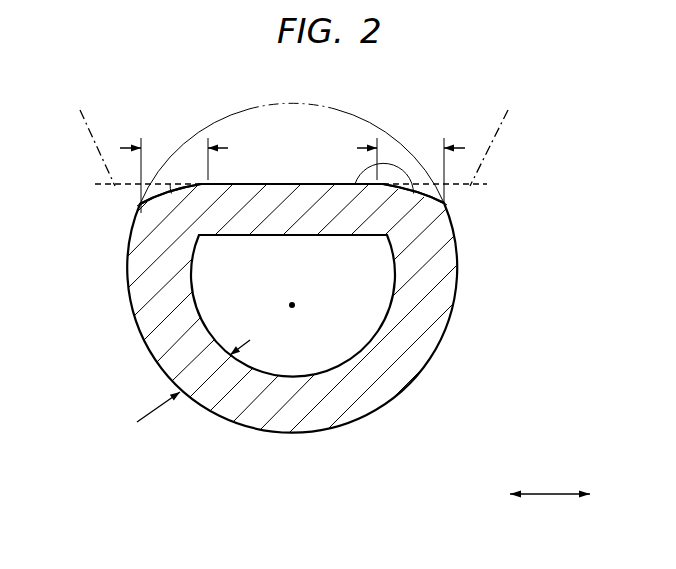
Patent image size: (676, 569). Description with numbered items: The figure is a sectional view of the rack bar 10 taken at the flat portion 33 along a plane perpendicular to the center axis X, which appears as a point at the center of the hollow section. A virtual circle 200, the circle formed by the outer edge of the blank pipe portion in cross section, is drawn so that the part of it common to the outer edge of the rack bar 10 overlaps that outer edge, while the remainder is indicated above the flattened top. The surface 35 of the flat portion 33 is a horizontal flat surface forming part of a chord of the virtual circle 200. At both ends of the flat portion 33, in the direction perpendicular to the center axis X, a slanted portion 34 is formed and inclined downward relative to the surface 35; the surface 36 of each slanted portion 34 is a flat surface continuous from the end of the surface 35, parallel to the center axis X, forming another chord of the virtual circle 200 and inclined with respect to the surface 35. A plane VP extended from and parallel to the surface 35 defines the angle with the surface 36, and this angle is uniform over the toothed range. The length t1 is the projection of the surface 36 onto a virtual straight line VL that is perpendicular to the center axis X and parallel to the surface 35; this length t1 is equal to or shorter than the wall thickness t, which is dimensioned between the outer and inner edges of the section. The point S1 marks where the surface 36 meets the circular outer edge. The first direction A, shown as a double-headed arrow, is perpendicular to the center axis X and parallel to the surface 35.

The rack bar 10 is at (272, 452).
The flat portion 33 is at (313, 198).
The slanted portion 34 is at (143, 207).
The surface of the flat portion 35 is at (250, 183).
The surface of the slanted portion 36 is at (140, 202).
The virtual circle 200 is at (226, 118).
The plane VP is at (100, 184).
The virtual straight line VL is at (293, 138).
The boundary point S1 is at (150, 192).
The length t1 is at (163, 147).
The wall thickness t is at (202, 378).
The center axis X is at (292, 308).
The first direction A is at (550, 496).